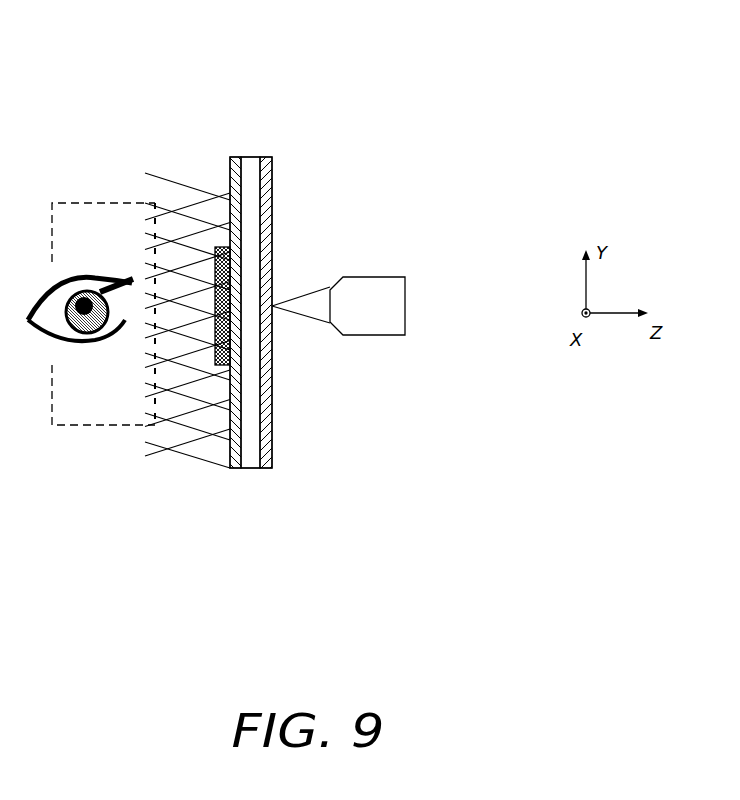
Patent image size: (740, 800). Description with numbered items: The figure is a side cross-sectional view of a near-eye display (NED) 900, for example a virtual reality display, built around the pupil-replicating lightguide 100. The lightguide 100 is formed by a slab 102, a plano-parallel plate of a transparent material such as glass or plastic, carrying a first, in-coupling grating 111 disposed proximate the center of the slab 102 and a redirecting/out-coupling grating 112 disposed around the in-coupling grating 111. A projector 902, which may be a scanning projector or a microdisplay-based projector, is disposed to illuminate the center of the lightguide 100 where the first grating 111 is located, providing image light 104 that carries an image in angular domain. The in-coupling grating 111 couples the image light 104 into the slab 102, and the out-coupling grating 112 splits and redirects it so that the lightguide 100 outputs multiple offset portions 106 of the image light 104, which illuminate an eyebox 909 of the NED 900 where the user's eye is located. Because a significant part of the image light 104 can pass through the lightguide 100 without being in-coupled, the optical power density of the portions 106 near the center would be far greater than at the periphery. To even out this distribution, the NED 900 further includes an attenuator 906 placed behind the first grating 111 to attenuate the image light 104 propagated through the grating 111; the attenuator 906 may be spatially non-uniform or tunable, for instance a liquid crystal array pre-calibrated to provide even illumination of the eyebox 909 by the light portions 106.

The near-eye display 900 is at (100, 84).
The pupil-replicating lightguide 100 is at (288, 132).
The slab 102 is at (250, 460).
The image light 104 is at (312, 306).
The portions of the image light 106 is at (192, 375).
The in-coupling grating 111 is at (273, 333).
The redirecting/out-coupling grating 112 is at (264, 185).
The projector 902 is at (350, 317).
The attenuator 906 is at (215, 258).
The eyebox 909 is at (82, 408).